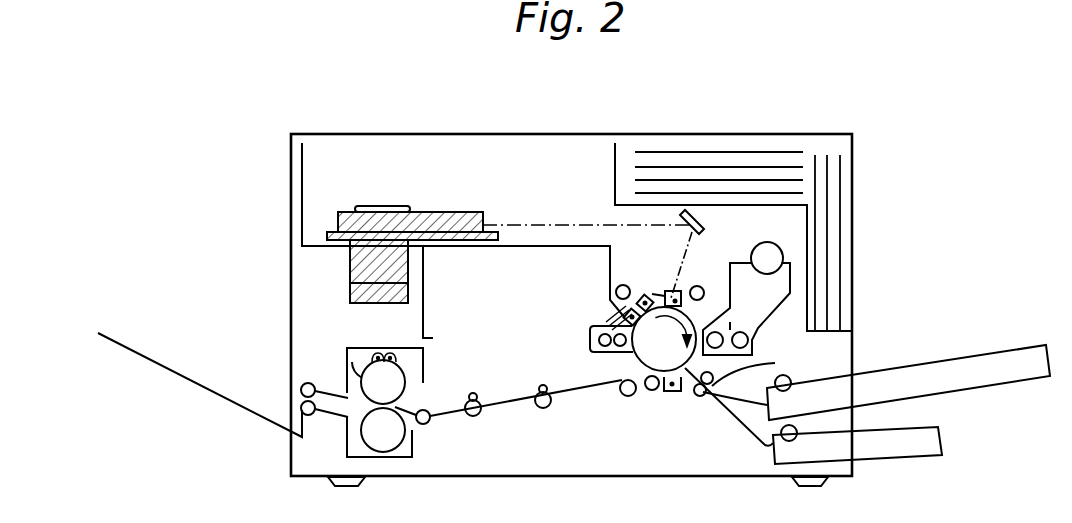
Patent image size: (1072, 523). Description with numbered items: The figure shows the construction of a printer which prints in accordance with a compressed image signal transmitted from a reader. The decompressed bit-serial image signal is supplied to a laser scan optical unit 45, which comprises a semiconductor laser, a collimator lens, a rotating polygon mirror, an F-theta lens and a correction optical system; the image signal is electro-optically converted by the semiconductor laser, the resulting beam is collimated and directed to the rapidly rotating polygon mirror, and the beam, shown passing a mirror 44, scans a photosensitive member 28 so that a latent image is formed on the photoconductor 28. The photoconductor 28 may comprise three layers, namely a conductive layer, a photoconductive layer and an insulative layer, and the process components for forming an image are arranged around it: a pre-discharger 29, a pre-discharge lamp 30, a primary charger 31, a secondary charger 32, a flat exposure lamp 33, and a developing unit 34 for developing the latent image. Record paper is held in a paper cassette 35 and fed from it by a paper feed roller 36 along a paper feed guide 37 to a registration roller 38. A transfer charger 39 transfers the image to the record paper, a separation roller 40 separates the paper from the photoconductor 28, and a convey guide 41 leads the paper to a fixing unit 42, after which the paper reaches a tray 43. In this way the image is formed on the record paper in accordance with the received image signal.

The photosensitive member 28 is at (636, 362).
The pre-discharger 29 is at (620, 256).
The pre-discharge lamp 30 is at (647, 296).
The primary charger 31 is at (665, 290).
The secondary charger 32 is at (683, 290).
The flat exposure lamp 33 is at (700, 287).
The developing unit 34 is at (758, 328).
The paper cassette 35 is at (838, 373).
The paper feed roller 36 is at (788, 381).
The paper feed guide 37 is at (748, 428).
The registration roller 38 is at (702, 396).
The transfer charger 39 is at (673, 393).
The separation roller 40 is at (650, 391).
The convey guide 41 is at (578, 398).
The fixing unit 42 is at (390, 382).
The tray 43 is at (202, 388).
The mirror 44 is at (703, 222).
The laser scan optical unit 45 is at (483, 213).